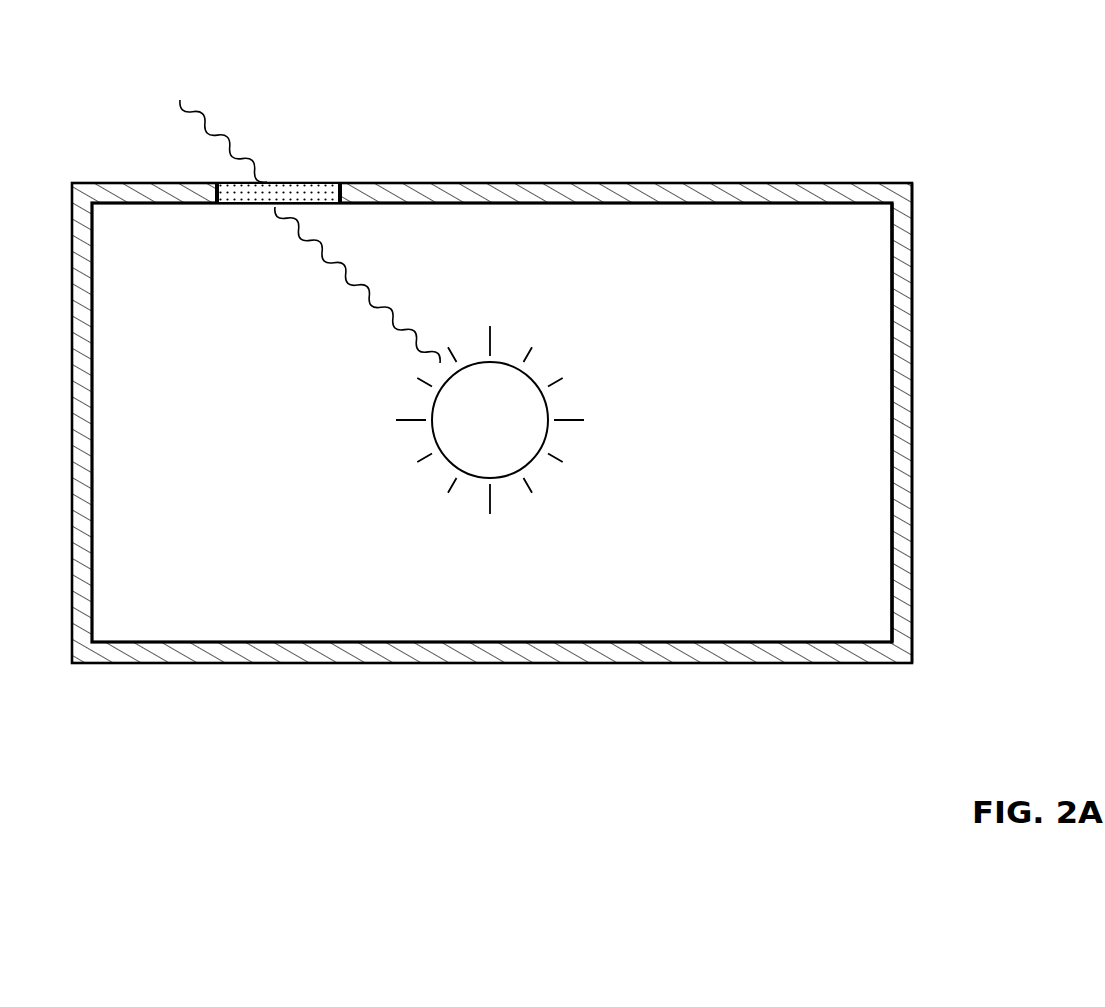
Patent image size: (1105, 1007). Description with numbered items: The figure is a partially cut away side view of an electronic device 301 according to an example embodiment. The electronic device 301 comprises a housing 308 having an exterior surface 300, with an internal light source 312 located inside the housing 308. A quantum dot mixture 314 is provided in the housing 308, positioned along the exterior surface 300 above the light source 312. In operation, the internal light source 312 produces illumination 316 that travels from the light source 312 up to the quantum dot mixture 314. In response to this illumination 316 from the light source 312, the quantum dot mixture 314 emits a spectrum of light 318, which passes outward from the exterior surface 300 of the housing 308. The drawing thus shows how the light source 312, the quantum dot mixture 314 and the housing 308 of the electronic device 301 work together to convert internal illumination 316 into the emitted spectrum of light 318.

The exterior surface 300 is at (533, 183).
The electronic device 301 is at (838, 72).
The housing 308 is at (900, 417).
The internal light source 312 is at (517, 436).
The quantum dot mixture 314 is at (328, 183).
The illumination 316 is at (348, 285).
The spectrum of light 318 is at (217, 125).